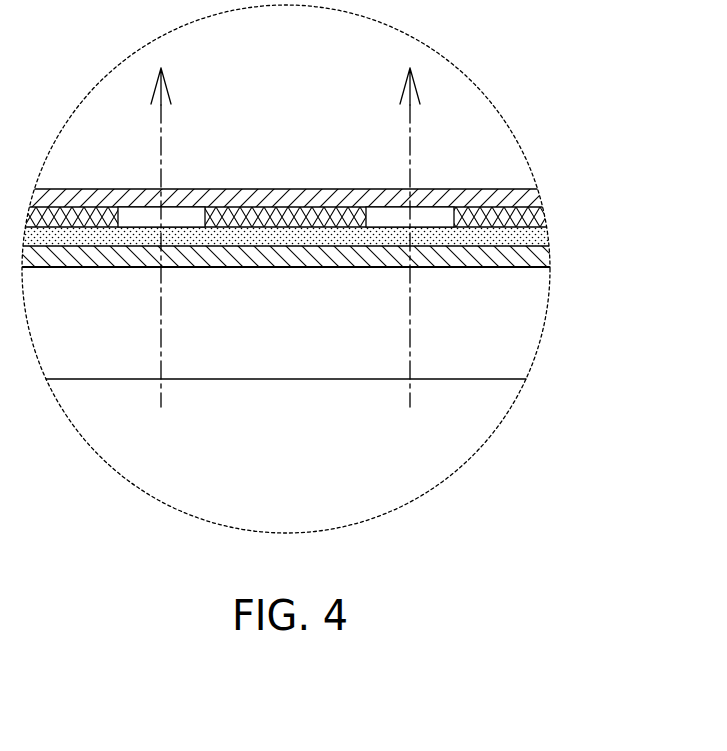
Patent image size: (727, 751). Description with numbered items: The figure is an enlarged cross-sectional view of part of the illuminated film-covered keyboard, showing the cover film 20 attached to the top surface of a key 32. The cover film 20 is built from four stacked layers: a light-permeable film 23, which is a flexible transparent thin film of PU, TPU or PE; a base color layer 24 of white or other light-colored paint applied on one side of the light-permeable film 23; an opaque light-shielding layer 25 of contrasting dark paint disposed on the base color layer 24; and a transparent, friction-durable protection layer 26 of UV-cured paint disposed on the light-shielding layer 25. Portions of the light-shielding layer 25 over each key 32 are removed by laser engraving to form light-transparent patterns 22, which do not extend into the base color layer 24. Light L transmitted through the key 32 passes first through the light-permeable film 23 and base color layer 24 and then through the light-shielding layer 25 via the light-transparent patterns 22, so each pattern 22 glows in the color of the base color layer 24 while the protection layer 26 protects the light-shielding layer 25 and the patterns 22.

The cover film 20 is at (363, 226).
The light-transparent pattern 22 is at (187, 217).
The light-permeable film 23 is at (363, 273).
The base color layer 24 is at (532, 237).
The light-shielding layer 25 is at (543, 220).
The protection layer 26 is at (507, 190).
The key 32 is at (507, 330).
The light L is at (160, 144).